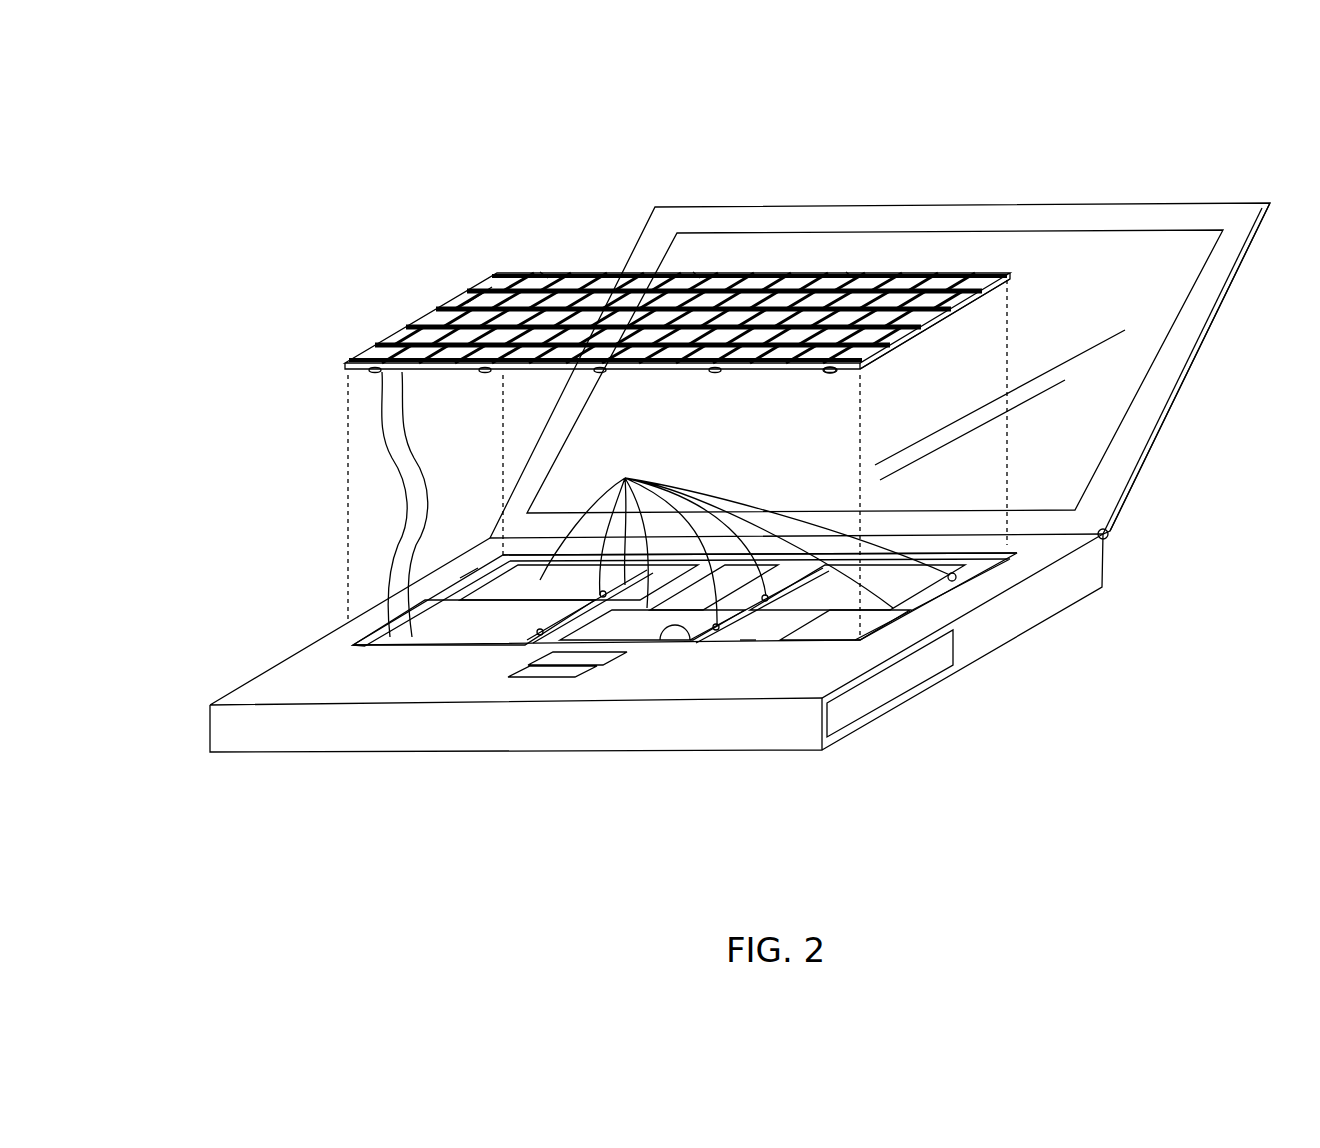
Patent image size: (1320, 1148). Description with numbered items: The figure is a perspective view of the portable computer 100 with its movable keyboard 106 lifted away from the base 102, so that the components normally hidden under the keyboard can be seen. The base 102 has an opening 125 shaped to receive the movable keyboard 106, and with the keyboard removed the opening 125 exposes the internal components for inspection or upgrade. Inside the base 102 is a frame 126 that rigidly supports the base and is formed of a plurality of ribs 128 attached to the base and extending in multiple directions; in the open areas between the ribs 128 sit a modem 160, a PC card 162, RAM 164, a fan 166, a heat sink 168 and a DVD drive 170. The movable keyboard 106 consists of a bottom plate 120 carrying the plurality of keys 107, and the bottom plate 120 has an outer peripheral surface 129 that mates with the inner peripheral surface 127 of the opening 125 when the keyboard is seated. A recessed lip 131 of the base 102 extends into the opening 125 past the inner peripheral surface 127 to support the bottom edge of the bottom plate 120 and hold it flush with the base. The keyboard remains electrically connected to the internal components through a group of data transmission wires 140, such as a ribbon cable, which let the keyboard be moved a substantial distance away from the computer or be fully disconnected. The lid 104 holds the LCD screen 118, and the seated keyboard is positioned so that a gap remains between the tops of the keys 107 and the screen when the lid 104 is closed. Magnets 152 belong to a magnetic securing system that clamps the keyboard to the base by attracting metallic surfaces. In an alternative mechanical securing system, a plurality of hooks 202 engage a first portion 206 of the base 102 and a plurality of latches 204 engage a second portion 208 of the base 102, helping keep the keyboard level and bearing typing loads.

The portable computer 100 is at (305, 198).
The base 102 is at (287, 657).
The lid 104 is at (753, 207).
The movable keyboard 106 is at (440, 312).
The keys 107 is at (492, 287).
The LCD screen 118 is at (1091, 422).
The bottom plate 120 is at (970, 305).
The opening 125 is at (450, 611).
The frame 126 is at (747, 645).
The inner peripheral surface 127 is at (470, 590).
The ribs 128 is at (870, 580).
The outer peripheral surface 129 is at (900, 340).
The recessed lip 131 is at (385, 626).
The data transmission wires 140 is at (397, 456).
The magnets 152 is at (745, 540).
The modem 160 is at (577, 596).
The PC card 162 is at (517, 631).
The RAM 164 is at (645, 641).
The fan 166 is at (701, 601).
The heat sink 168 is at (850, 601).
The DVD drive 170 is at (830, 639).
The hooks 202 is at (830, 370).
The latches 204 is at (540, 272).
The first portion 206 is at (690, 645).
The second portion 208 is at (542, 556).